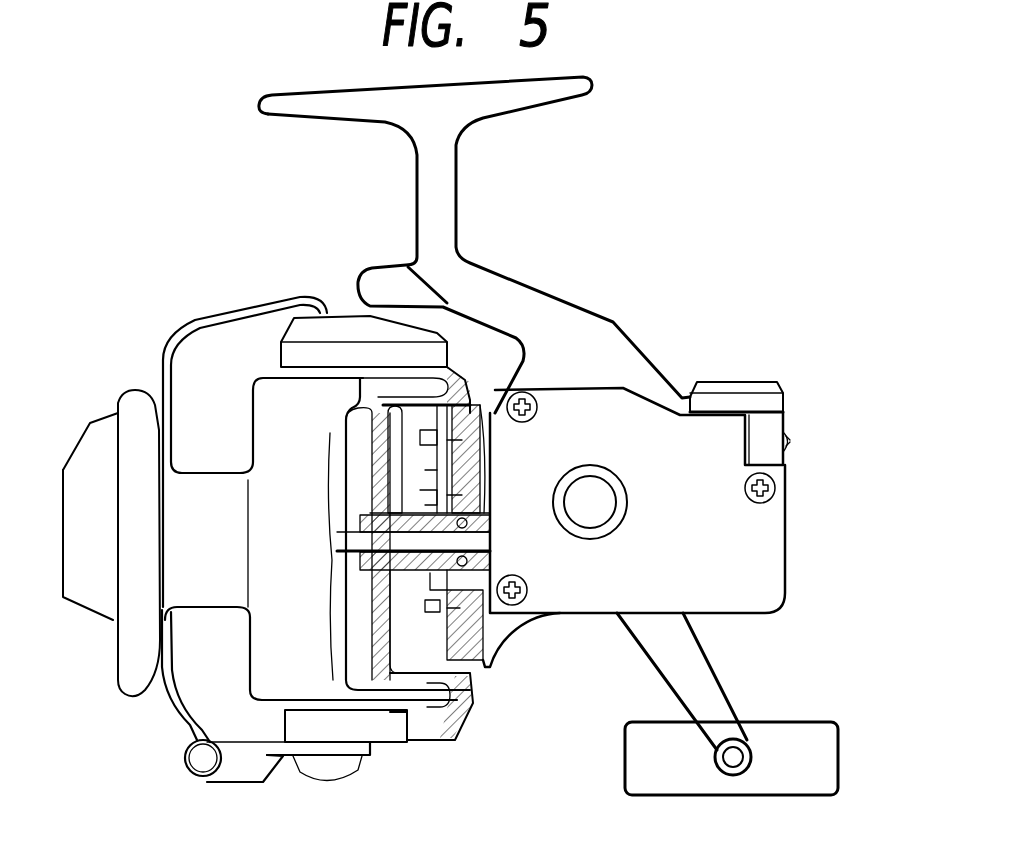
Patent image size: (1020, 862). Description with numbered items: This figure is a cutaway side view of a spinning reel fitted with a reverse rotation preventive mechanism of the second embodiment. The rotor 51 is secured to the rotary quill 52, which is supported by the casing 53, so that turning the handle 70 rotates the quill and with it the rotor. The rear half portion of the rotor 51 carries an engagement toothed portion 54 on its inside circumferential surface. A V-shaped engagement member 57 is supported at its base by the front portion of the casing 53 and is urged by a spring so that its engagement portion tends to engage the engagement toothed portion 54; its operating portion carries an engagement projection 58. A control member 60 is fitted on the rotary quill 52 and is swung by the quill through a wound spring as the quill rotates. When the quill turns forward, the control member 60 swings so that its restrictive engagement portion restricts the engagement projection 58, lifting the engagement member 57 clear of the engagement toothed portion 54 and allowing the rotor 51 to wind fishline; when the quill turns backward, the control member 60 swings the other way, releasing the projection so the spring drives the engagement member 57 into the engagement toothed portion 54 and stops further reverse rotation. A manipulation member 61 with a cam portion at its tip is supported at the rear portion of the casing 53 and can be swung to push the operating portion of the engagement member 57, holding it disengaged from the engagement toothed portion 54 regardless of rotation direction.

The rotor 51 is at (355, 730).
The rotary quill 52 is at (397, 567).
The casing 53 is at (630, 418).
The engagement toothed portion 54 is at (452, 745).
The V-shaped engagement member 57 is at (483, 413).
The engagement projection 58 is at (420, 462).
The control member 60 is at (408, 470).
The manipulation member 61 is at (740, 380).
The handle 70 is at (663, 677).